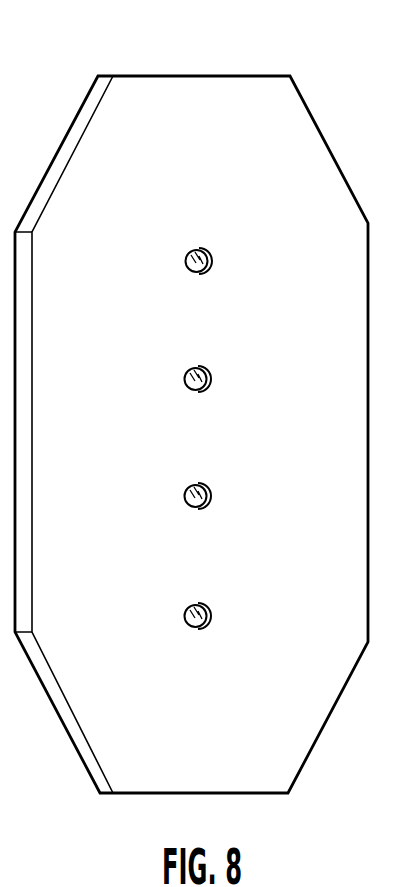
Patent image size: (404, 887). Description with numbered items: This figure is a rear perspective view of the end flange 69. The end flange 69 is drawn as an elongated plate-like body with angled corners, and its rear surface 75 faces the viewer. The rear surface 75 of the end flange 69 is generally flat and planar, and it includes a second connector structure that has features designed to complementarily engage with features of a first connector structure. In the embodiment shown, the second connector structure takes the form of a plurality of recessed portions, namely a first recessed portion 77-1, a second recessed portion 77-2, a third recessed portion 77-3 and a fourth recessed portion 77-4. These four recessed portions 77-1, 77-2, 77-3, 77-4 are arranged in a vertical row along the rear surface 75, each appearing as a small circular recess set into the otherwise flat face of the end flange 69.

The end flange 69 is at (193, 75).
The rear surface 75 is at (137, 329).
The first recessed portion 77-1 is at (206, 250).
The second recessed portion 77-2 is at (205, 368).
The third recessed portion 77-3 is at (205, 485).
The fourth recessed portion 77-4 is at (205, 605).